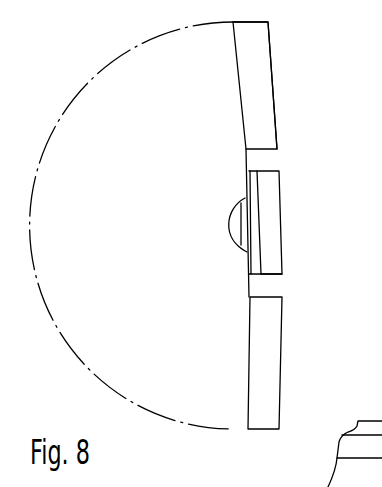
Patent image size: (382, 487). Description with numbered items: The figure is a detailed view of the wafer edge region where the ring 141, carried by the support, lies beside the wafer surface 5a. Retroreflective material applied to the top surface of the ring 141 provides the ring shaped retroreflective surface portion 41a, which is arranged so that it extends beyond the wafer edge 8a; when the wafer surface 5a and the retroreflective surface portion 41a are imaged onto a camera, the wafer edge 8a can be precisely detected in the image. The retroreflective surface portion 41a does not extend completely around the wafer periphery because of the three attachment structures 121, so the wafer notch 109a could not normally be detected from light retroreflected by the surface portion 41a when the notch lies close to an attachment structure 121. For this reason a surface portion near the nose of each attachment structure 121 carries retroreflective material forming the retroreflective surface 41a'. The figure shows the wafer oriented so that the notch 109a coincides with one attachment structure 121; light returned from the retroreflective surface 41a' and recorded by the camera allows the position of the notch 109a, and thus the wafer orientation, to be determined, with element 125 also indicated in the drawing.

The wafer surface 5a is at (153, 147).
The ring 141 is at (272, 46).
The retroreflective surface portion 41a is at (281, 225).
The wafer edge 8a is at (248, 165).
The attachment structure 121 is at (301, 217).
The wafer notch 109a is at (230, 212).
The retroreflective surface 41a' is at (222, 243).
The base plate 125 is at (272, 274).